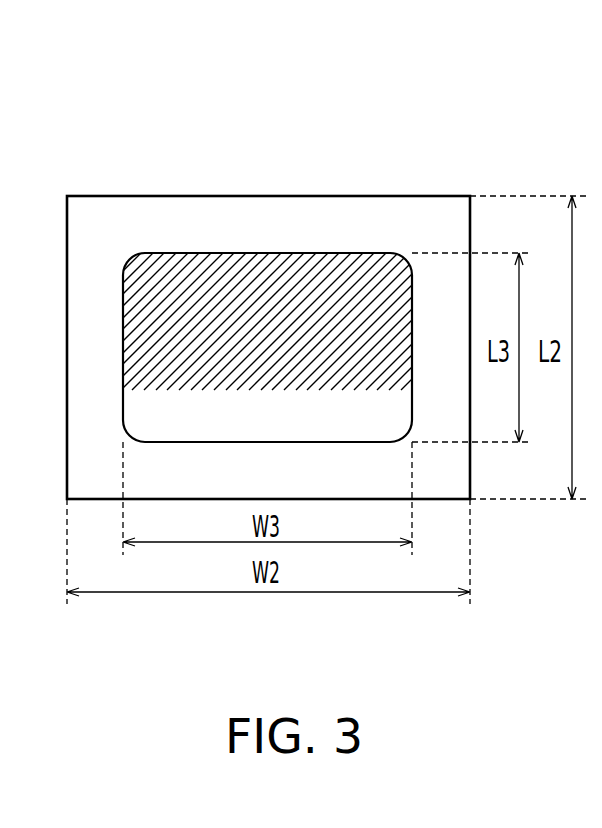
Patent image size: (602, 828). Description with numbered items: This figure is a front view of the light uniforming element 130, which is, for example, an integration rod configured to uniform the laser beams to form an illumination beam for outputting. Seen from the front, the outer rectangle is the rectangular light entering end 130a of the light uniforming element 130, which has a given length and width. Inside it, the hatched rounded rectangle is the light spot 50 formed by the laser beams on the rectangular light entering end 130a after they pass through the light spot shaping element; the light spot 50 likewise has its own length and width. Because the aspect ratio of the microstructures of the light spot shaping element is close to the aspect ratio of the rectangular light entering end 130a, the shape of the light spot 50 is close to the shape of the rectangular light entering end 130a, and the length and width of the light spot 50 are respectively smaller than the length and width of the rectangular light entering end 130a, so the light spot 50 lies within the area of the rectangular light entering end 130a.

The light uniforming element 130 is at (489, 132).
The rectangular light entering end 130a is at (125, 233).
The light spot 50 is at (285, 278).